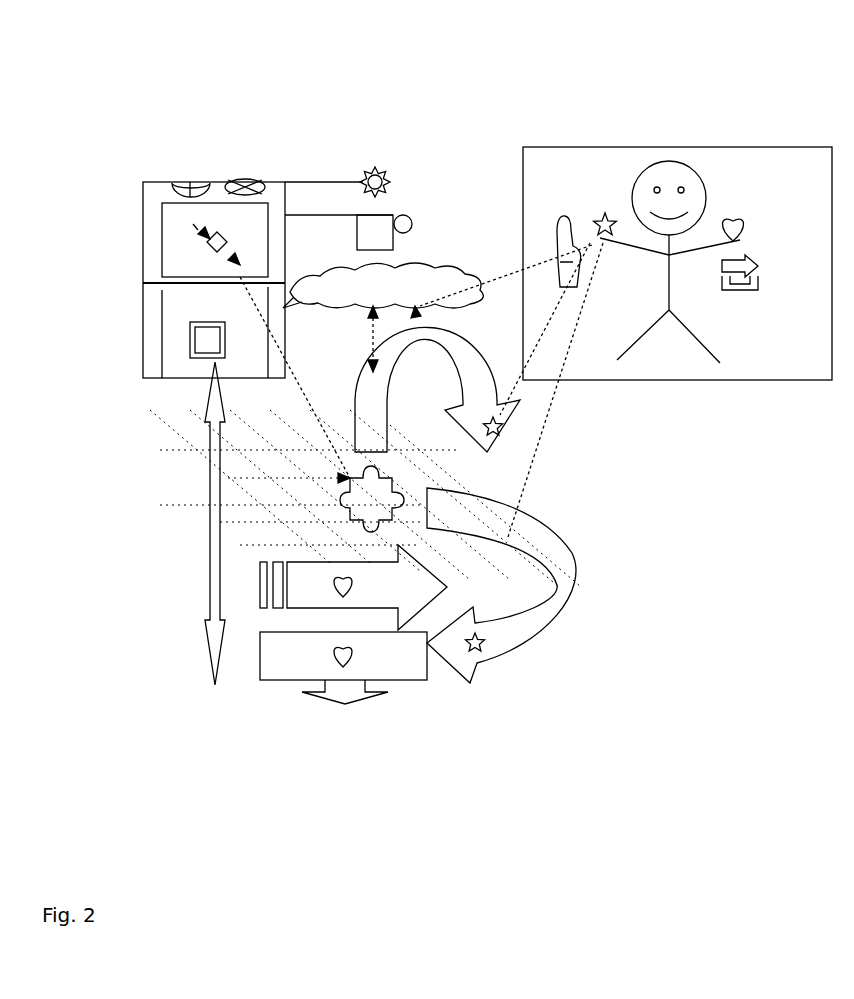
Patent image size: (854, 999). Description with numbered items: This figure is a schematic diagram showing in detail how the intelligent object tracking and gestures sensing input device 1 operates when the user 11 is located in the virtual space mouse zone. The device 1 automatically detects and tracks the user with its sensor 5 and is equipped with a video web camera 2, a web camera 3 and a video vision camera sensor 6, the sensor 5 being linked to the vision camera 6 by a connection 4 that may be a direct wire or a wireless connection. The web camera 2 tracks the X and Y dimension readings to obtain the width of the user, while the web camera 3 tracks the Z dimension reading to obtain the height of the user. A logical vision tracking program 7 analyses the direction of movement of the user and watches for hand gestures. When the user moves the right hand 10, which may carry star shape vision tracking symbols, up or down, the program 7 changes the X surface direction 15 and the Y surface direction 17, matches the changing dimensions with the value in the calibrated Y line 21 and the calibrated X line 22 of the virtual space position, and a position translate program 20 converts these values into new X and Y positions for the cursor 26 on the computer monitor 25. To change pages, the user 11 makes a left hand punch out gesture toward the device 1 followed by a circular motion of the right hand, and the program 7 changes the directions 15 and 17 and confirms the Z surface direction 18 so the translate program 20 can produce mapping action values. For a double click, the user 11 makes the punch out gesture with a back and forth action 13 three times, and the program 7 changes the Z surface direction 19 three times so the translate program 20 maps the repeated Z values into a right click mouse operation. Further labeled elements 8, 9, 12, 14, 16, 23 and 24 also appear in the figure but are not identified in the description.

The intelligent object tracking and gestures sensing input device 1 is at (152, 170).
The video web camera 2 is at (190, 170).
The web camera 3 is at (245, 170).
The connection 4 is at (333, 200).
The sensor 5 is at (375, 152).
The video vision camera sensor 6 is at (412, 200).
The logical vision tracking program 7 is at (448, 256).
The user environment 8 is at (542, 135).
The gesture 9 is at (578, 201).
The right hand 10 is at (615, 201).
The user 11 is at (670, 148).
The emotional state 12 is at (723, 201).
The back and forth action 13 is at (762, 240).
The input signal path 14 is at (556, 349).
The X surface direction 15 is at (515, 436).
The relation link 16 is at (497, 482).
The Y surface direction 17 is at (569, 527).
The Z surface direction 18 is at (390, 702).
The Z surface direction 19 is at (278, 627).
The position translate program 20 is at (191, 593).
The calibrated Y line 21 is at (265, 505).
The calibrated X line 22 is at (233, 450).
The memory 23 is at (171, 340).
The processing unit 24 is at (171, 305).
The computer monitor 25 is at (151, 268).
The cursor 26 is at (193, 233).